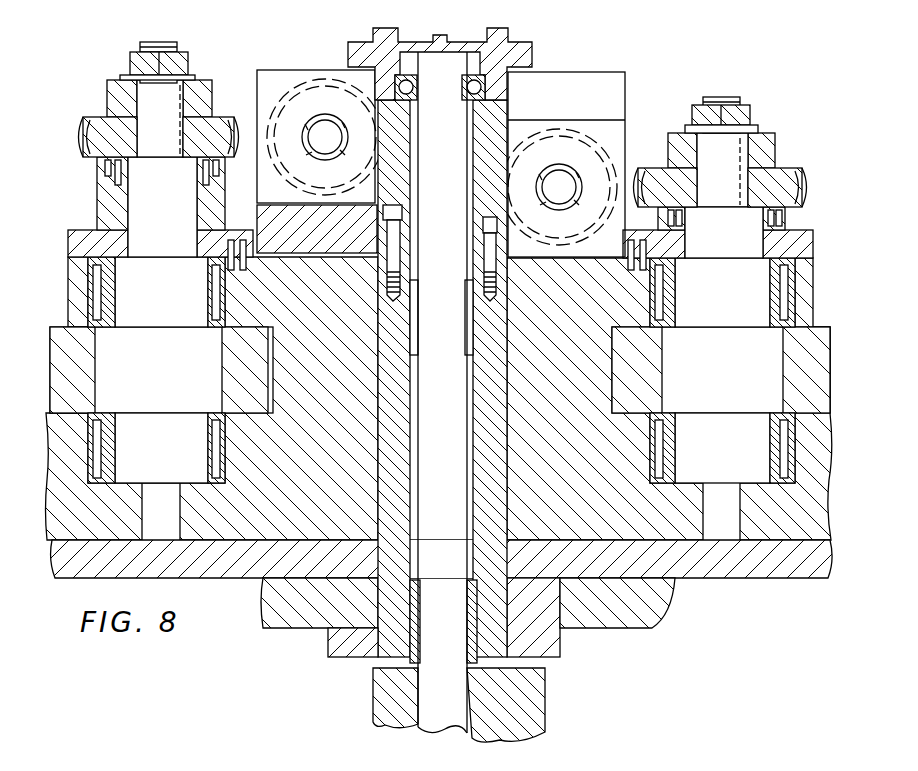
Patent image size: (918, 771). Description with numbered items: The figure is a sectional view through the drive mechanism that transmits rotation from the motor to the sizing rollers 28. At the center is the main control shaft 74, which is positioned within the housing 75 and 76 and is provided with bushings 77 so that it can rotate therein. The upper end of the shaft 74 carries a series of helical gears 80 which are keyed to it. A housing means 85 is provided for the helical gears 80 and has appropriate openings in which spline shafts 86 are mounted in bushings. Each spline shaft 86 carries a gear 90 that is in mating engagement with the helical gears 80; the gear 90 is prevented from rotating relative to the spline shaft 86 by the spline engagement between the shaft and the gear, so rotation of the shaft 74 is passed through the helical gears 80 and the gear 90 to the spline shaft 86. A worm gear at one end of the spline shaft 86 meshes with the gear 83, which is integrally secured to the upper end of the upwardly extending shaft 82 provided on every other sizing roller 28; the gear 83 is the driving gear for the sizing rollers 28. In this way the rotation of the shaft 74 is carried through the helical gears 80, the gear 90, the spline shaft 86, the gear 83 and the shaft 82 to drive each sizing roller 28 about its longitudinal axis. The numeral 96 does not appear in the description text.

The sizing roller 28 is at (176, 384).
The shaft 74 is at (422, 728).
The housing 75 is at (328, 648).
The housing 76 is at (487, 568).
The bushing 77 is at (405, 663).
The helical gear 80 is at (500, 128).
The upwardly extending shaft 82 is at (172, 216).
The gear 83 is at (93, 120).
The housing means 85 is at (553, 80).
The spline shaft 86 is at (322, 120).
The gear 90 is at (325, 78).
The eccentric 96 is at (597, 153).